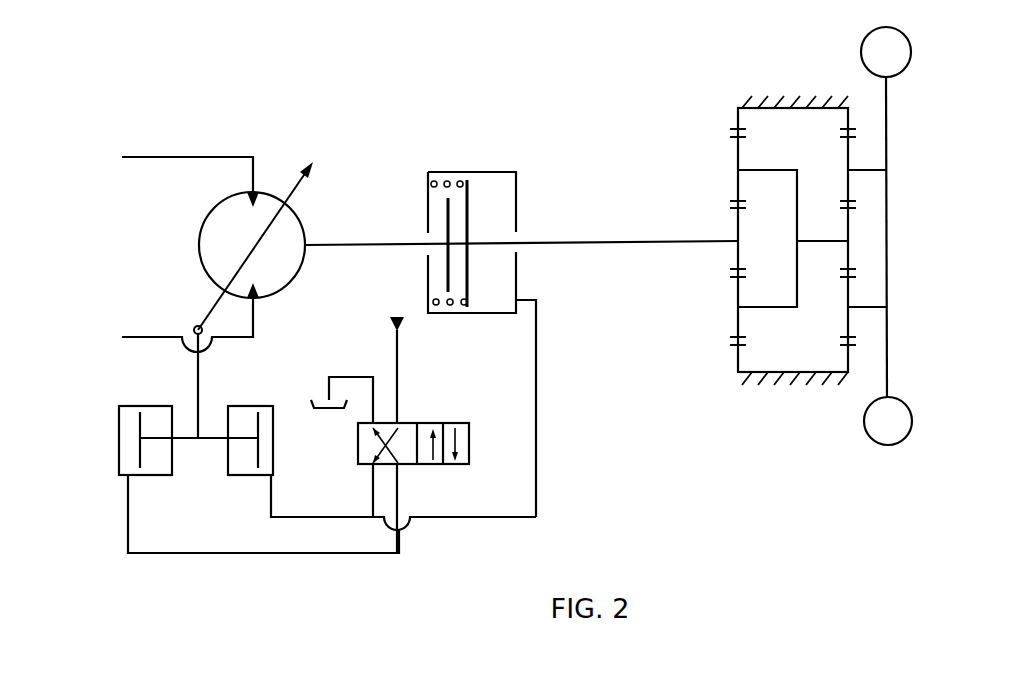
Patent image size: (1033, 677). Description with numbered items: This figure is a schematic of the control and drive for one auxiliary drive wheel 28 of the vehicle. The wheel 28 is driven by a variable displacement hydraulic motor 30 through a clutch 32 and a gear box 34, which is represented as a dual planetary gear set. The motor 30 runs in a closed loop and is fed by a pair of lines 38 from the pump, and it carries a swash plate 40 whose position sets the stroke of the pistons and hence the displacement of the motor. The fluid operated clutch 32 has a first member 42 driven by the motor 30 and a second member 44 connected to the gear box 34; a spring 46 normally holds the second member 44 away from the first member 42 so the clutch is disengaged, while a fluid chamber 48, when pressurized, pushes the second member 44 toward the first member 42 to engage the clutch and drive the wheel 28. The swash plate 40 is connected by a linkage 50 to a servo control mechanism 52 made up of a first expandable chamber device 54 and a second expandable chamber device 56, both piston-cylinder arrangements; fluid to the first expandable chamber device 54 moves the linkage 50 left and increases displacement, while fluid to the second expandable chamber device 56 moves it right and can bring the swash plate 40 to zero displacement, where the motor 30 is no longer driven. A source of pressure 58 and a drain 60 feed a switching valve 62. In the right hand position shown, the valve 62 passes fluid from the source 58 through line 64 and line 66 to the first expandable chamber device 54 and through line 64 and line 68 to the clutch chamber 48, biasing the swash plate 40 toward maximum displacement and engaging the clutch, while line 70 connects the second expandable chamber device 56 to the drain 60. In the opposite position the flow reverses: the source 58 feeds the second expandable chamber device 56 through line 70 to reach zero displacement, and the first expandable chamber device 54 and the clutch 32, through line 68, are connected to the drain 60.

The auxiliary drive wheel 28 is at (884, 447).
The variable displacement hydraulic motor 30 is at (222, 210).
The clutch 32 is at (414, 174).
The gear box 34 is at (794, 396).
The lines 38 is at (142, 340).
The swash plate 40 is at (295, 190).
The first member 42 is at (445, 207).
The second member 44 is at (467, 222).
The spring 46 is at (448, 180).
The fluid chamber 48 is at (507, 284).
The linkage 50 is at (197, 382).
The servo control mechanism 52 is at (198, 452).
The first expandable chamber device 54 is at (243, 476).
The second expandable chamber device 56 is at (119, 437).
The source of pressure 58 is at (401, 320).
The drain 60 is at (355, 372).
The switching valve 62 is at (442, 465).
The line 64 is at (373, 483).
The line 66 is at (312, 518).
The line 68 is at (537, 370).
The line 70 is at (175, 555).